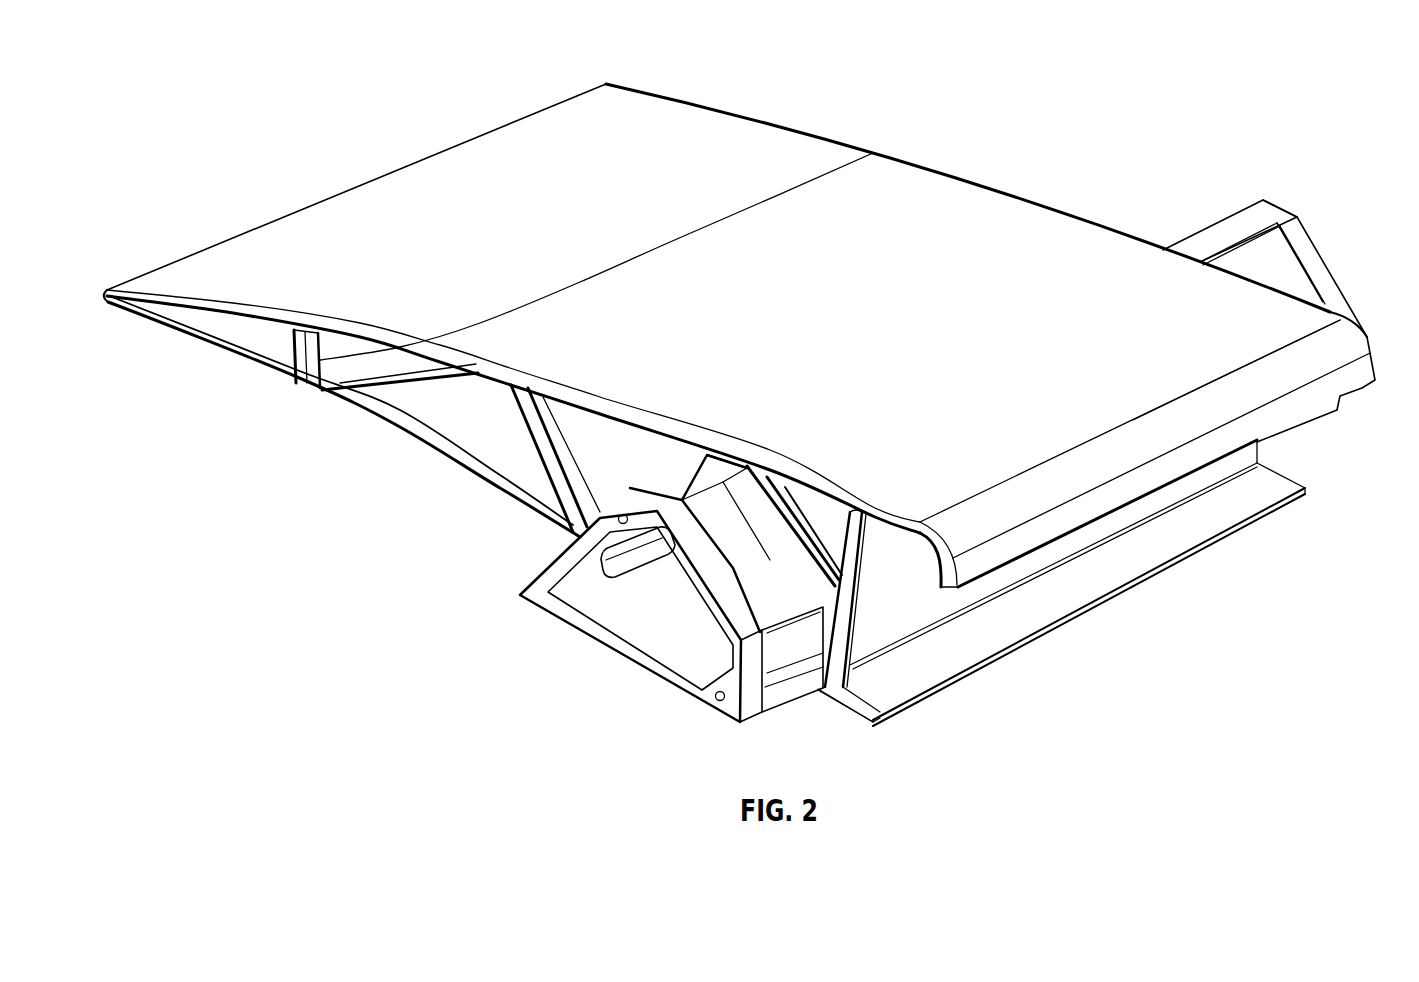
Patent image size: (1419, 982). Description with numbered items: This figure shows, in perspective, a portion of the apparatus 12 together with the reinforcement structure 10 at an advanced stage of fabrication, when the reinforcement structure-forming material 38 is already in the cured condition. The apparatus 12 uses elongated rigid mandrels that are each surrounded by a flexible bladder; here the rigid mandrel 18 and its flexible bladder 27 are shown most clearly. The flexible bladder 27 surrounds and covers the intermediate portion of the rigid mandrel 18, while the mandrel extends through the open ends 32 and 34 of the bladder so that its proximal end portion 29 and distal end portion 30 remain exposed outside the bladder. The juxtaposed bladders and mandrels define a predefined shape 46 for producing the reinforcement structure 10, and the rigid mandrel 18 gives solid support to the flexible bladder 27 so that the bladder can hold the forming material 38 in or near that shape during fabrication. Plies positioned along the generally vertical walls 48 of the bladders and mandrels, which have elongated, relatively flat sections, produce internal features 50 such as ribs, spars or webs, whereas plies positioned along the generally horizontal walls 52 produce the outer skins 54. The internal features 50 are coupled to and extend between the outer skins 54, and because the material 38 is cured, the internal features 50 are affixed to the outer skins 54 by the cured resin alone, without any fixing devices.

The reinforcement structure 10 is at (708, 125).
The apparatus 12 is at (1290, 218).
The rigid mandrel 18 is at (607, 625).
The flexible bladder 27 is at (775, 690).
The proximal end portion 29 is at (740, 452).
The distal end portion 30 is at (1302, 232).
The open end 32 is at (722, 628).
The open end 34 is at (1327, 297).
The reinforcement structure-forming material 38 is at (415, 178).
The predefined shape 46 is at (1062, 165).
The generally vertical wall 48 is at (713, 575).
The internal feature 50 is at (337, 348).
The generally horizontal wall 52 is at (685, 480).
The outer skin 54 is at (233, 318).